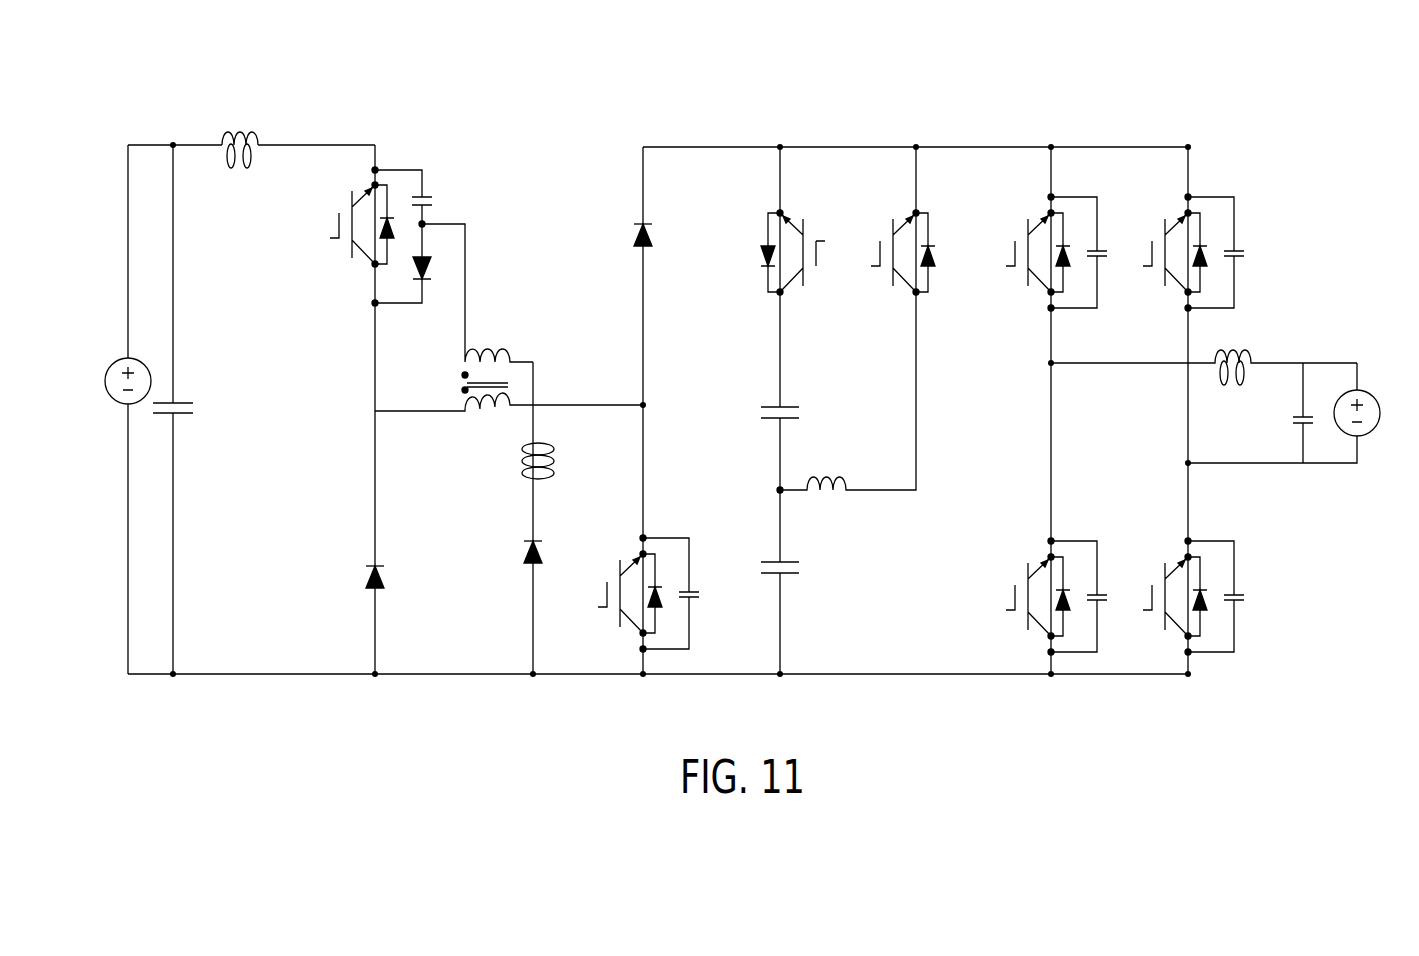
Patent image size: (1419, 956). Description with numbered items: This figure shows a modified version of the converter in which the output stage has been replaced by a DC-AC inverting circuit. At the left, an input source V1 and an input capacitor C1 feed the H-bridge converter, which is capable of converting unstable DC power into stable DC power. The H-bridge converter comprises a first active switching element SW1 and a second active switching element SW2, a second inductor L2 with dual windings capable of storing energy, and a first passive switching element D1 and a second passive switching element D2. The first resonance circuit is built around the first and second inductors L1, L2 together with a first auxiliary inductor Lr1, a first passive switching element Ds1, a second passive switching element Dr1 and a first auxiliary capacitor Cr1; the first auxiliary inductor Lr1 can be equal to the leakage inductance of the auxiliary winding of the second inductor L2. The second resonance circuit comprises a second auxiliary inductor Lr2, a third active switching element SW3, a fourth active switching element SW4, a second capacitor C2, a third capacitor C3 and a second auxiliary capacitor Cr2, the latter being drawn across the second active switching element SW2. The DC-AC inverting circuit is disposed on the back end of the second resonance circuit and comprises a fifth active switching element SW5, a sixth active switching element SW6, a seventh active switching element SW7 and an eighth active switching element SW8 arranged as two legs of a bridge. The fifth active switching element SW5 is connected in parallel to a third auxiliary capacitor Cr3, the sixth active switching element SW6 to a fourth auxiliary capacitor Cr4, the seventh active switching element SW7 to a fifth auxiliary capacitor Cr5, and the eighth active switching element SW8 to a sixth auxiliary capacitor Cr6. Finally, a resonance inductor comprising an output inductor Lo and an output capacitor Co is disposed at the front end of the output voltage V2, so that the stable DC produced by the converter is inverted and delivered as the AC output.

The input voltage source V1 is at (114, 409).
The input capacitor C1 is at (192, 409).
The first inductor L1 is at (240, 135).
The first active switching element SW1 is at (357, 210).
The first auxiliary capacitor Cr1 is at (420, 197).
The first passive switching element Ds1 is at (416, 266).
The first passive switching element D1 is at (391, 589).
The second inductor L2 is at (509, 345).
The first auxiliary inductor Lr1 is at (545, 518).
The second passive switching element Dr1 is at (547, 571).
The second passive switching element D2 is at (619, 224).
The second active switching element SW2 is at (627, 579).
The second auxiliary capacitor Cr2 is at (692, 593).
The third active switching element SW3 is at (798, 237).
The fourth active switching element SW4 is at (903, 237).
The second capacitor C2 is at (800, 391).
The second auxiliary inductor Lr2 is at (846, 413).
The third capacitor C3 is at (800, 582).
The fifth active switching element SW5 is at (1038, 237).
The sixth active switching element SW6 is at (1035, 581).
The seventh active switching element SW7 is at (1174, 237).
The eighth active switching element SW8 is at (1172, 581).
The third auxiliary capacitor Cr3 is at (1092, 252).
The fourth auxiliary capacitor Cr4 is at (1092, 596).
The fifth auxiliary capacitor Cr5 is at (1229, 252).
The sixth auxiliary capacitor Cr6 is at (1228, 596).
The output inductor Lo is at (1204, 354).
The output capacitor Co is at (1291, 413).
The output voltage V2 is at (1294, 413).